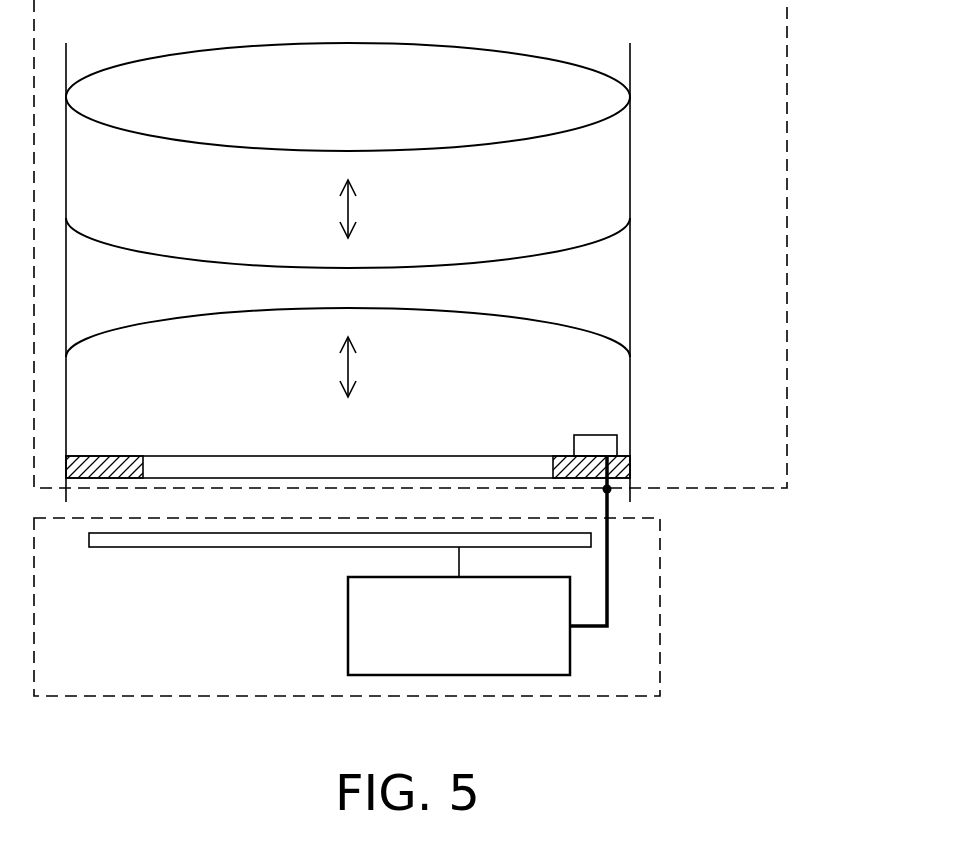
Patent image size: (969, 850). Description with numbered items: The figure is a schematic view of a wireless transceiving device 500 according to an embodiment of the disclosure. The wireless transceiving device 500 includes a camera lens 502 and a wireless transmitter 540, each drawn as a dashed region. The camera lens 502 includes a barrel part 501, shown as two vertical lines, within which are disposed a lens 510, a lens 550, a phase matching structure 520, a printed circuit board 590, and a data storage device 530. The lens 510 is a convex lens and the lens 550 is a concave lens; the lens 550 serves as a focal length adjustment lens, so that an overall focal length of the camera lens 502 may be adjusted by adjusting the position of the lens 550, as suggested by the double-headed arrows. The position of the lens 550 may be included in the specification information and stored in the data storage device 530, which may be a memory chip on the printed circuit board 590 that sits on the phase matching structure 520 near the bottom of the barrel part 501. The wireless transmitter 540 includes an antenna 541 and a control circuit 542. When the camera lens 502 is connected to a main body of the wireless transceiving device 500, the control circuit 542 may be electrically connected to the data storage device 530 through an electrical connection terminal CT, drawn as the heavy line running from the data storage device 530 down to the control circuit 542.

The wireless transceiving device 500 is at (448, 376).
The barrel part 501 is at (398, 272).
The camera lens 502 is at (410, 313).
The lens 510 is at (603, 104).
The lens 550 is at (603, 247).
The phase matching structure 520 is at (263, 461).
The printed circuit board 590 is at (105, 458).
The data storage device 530 is at (598, 438).
The electrical connection terminal CT is at (609, 491).
The wireless transmitter 540 is at (383, 607).
The antenna 541 is at (177, 543).
The control circuit 542 is at (348, 627).